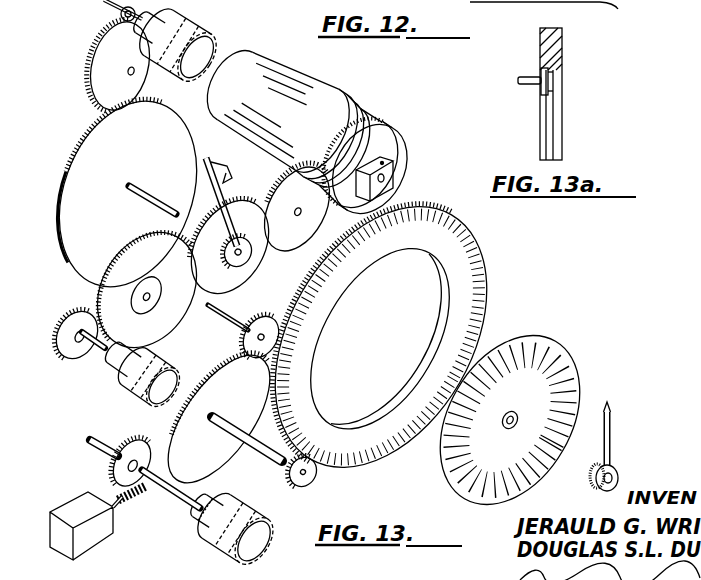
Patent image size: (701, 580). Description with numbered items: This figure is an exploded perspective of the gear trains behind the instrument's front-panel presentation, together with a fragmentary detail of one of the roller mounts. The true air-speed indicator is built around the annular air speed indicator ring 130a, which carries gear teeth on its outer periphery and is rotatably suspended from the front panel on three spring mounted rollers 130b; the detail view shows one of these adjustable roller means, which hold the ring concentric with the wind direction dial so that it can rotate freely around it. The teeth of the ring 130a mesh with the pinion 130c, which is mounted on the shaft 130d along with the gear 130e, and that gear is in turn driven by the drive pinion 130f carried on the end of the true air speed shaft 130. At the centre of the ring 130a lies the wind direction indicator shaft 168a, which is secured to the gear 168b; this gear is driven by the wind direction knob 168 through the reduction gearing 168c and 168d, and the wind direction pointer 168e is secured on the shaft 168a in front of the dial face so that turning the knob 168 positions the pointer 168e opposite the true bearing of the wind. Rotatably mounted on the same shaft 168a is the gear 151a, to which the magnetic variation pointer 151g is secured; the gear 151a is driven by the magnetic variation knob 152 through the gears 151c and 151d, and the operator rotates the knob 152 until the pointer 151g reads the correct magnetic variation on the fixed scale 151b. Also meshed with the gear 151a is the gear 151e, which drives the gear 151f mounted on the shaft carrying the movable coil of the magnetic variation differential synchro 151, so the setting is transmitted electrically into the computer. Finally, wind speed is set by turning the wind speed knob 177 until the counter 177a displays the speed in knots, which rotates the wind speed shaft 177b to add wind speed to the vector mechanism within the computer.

In FIG. 13, the true air speed shaft 130 is at (237, 310).
In FIG. 13, the air speed indicator ring 130a is at (476, 257).
In FIG. 13A, the air speed indicator ring 130a is at (562, 50).
In FIG. 13A, the spring mounted rollers 130b is at (560, 75).
In FIG. 13, the pinion 130c is at (315, 484).
In FIG. 13, the shaft 130d is at (292, 468).
In FIG. 13, the gear 130e is at (240, 400).
In FIG. 13, the drive pinion 130f is at (265, 330).
In FIG. 13, the magnetic variation differential synchro 151 is at (323, 78).
In FIG. 13, the gear 151a is at (208, 290).
In FIG. 13, the fixed scale 151b is at (568, 348).
In FIG. 13, the gear 151c is at (72, 318).
In FIG. 13, the gear 151d is at (125, 280).
In FIG. 13, the gear 151e is at (307, 228).
In FIG. 13, the gear 151f is at (394, 141).
In FIG. 13, the magnetic variation pointer 151g is at (220, 186).
In FIG. 13, the magnetic variation knob 152 is at (136, 397).
In FIG. 13, the wind direction knob 168 is at (218, 42).
In FIG. 13, the wind direction indicator shaft 168a is at (146, 213).
In FIG. 13, the gear 168b is at (87, 142).
In FIG. 13, the reduction gearing 168c is at (150, 89).
In FIG. 13, the reduction gearing 168d is at (122, 16).
In FIG. 13, the wind direction pointer 168e is at (600, 458).
In FIG. 13, the wind speed knob 177 is at (254, 562).
In FIG. 13, the counter 177a is at (96, 539).
In FIG. 13, the wind speed shaft 177b is at (126, 469).